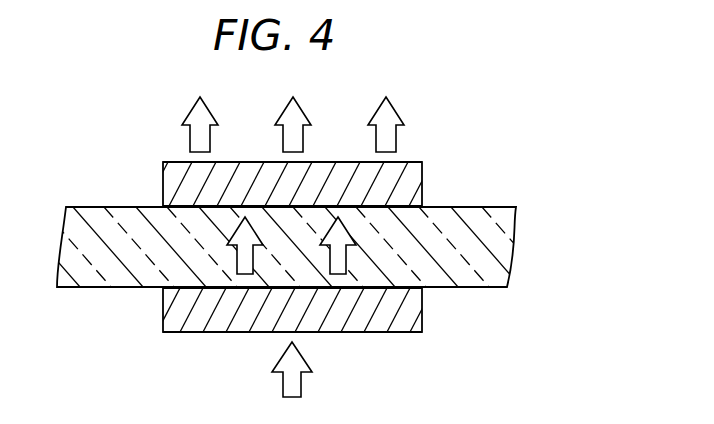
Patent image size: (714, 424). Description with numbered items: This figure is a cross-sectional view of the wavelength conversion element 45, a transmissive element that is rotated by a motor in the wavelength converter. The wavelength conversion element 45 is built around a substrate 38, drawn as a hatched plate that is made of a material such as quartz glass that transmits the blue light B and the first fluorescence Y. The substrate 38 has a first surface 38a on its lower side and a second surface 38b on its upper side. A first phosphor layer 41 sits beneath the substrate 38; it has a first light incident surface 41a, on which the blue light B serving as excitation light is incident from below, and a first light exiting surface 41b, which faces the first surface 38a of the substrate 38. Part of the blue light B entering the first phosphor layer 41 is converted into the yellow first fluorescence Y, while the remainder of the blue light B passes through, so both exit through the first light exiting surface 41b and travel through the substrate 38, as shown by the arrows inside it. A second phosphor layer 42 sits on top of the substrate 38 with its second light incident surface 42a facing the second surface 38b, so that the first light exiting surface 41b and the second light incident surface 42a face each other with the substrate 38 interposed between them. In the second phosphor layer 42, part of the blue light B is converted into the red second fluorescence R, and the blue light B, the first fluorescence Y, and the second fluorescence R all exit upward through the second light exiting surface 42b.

The wavelength conversion element 45 is at (167, 133).
The substrate 38 is at (501, 248).
The first surface 38a is at (486, 288).
The second surface 38b is at (486, 207).
The second phosphor layer 42 is at (417, 180).
The second light incident surface 42a is at (172, 212).
The second light exiting surface 42b is at (177, 162).
The first phosphor layer 41 is at (416, 315).
The first light incident surface 41a is at (175, 333).
The first light exiting surface 41b is at (163, 284).
The blue light B is at (215, 117).
The first fluorescence Y is at (309, 117).
The second fluorescence R is at (402, 117).